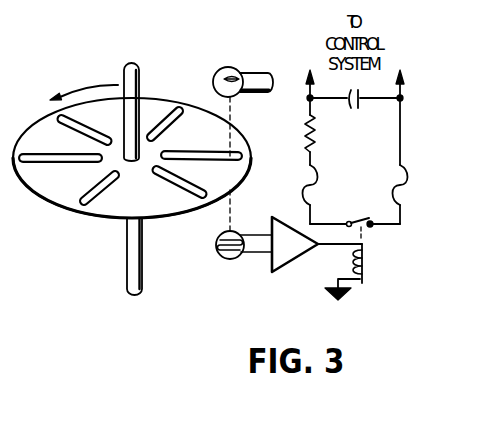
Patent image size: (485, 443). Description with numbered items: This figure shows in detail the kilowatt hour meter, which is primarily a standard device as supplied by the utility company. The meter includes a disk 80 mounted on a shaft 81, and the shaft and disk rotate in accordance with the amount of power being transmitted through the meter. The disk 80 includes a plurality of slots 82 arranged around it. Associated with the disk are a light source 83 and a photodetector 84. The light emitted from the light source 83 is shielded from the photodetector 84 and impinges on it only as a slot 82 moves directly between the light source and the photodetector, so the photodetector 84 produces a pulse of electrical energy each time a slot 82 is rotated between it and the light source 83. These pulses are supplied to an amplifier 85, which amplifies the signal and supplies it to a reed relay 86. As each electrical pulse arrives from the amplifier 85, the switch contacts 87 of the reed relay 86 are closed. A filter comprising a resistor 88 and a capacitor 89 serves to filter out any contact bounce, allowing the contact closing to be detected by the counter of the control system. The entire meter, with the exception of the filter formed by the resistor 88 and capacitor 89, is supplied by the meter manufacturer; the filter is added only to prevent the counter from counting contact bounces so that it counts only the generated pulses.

The disk 80 is at (36, 133).
The shaft 81 is at (134, 80).
The slots 82 is at (96, 184).
The light source 83 is at (248, 72).
The photodetector 84 is at (228, 259).
The amplifier 85 is at (285, 257).
The reed relay 86 is at (371, 265).
The switch contacts 87 is at (351, 214).
The resistor 88 is at (306, 148).
The capacitor 89 is at (354, 112).